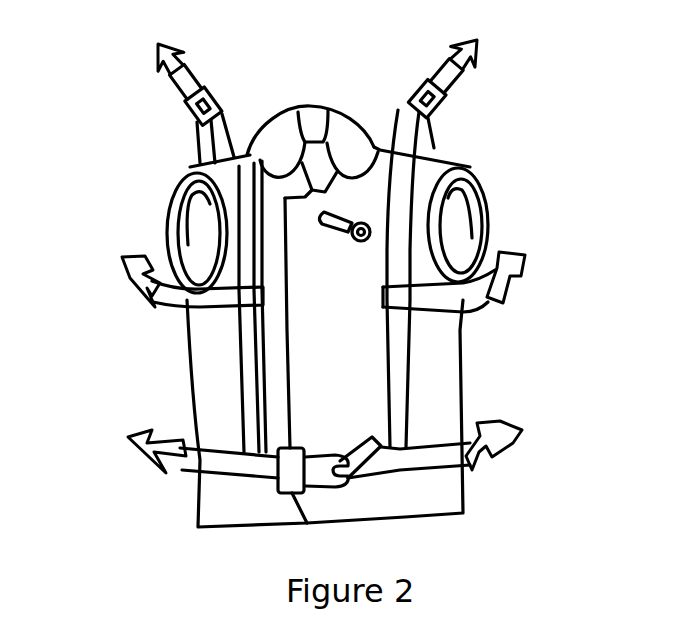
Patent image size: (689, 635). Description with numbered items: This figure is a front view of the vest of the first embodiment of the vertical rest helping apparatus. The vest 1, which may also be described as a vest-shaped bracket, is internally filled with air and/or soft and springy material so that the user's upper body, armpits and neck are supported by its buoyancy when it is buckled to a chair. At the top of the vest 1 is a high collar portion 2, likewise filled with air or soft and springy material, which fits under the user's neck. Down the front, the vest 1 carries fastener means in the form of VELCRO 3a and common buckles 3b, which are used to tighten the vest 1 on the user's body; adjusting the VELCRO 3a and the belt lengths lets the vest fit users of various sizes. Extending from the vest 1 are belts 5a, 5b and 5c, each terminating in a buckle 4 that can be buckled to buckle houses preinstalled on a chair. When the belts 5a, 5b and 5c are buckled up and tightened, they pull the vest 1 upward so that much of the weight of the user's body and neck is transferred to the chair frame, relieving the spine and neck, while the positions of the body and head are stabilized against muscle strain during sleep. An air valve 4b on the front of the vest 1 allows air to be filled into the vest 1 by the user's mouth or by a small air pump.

The vest 1 is at (313, 404).
The high collar portion 2 is at (313, 121).
The VELCRO 3a is at (273, 348).
The common buckles 3b is at (292, 470).
The buckles 4 is at (160, 53).
The air valve 4b is at (372, 227).
The belts 5a is at (186, 84).
The belts 5b is at (200, 300).
The belts 5c is at (207, 465).